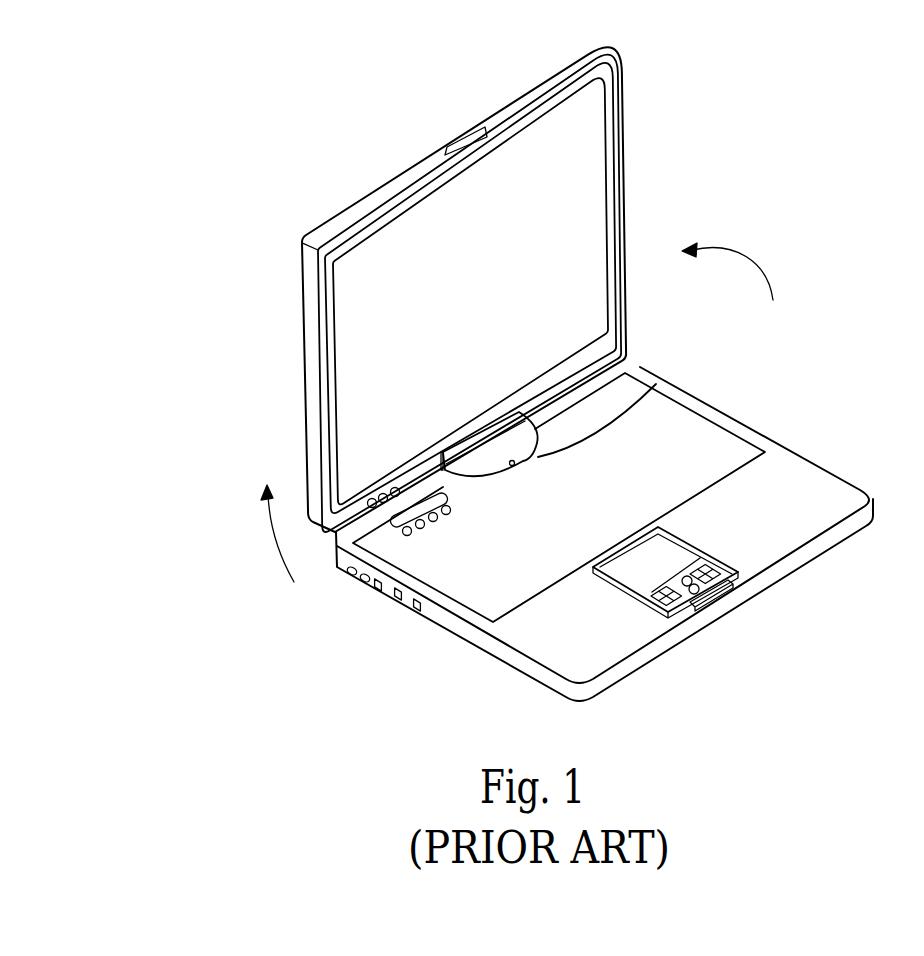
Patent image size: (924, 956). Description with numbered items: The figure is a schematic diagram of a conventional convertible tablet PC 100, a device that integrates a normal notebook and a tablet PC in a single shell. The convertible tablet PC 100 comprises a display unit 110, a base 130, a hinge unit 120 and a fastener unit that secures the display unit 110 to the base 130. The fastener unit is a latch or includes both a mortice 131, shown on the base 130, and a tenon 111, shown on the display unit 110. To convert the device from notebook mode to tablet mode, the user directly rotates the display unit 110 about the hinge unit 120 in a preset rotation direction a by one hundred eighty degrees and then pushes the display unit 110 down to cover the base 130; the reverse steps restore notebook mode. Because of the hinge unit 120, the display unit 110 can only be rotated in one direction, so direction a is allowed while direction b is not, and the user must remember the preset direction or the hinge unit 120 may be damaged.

The convertible tablet PC 100 is at (163, 171).
The display unit 110 is at (625, 213).
The tenon 111 is at (483, 127).
The hinge unit 120 is at (652, 392).
The base 130 is at (828, 462).
The mortice 131 is at (728, 585).